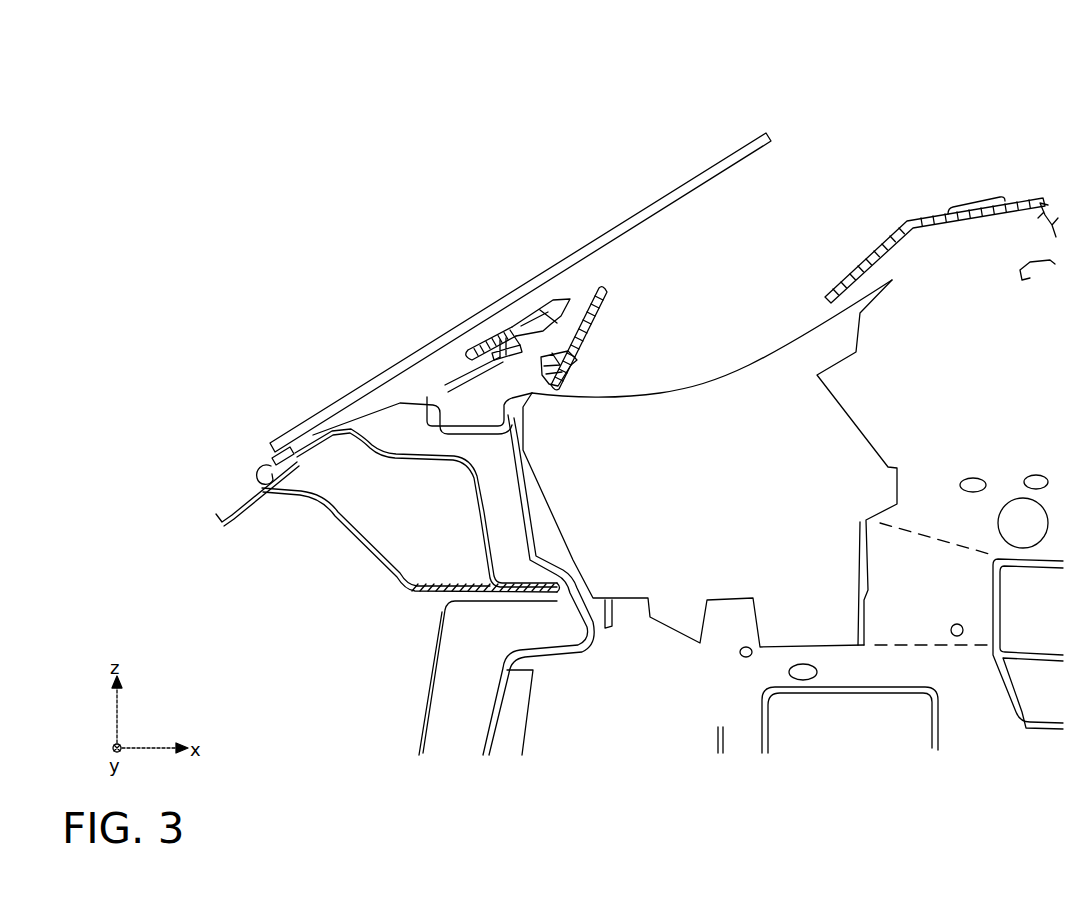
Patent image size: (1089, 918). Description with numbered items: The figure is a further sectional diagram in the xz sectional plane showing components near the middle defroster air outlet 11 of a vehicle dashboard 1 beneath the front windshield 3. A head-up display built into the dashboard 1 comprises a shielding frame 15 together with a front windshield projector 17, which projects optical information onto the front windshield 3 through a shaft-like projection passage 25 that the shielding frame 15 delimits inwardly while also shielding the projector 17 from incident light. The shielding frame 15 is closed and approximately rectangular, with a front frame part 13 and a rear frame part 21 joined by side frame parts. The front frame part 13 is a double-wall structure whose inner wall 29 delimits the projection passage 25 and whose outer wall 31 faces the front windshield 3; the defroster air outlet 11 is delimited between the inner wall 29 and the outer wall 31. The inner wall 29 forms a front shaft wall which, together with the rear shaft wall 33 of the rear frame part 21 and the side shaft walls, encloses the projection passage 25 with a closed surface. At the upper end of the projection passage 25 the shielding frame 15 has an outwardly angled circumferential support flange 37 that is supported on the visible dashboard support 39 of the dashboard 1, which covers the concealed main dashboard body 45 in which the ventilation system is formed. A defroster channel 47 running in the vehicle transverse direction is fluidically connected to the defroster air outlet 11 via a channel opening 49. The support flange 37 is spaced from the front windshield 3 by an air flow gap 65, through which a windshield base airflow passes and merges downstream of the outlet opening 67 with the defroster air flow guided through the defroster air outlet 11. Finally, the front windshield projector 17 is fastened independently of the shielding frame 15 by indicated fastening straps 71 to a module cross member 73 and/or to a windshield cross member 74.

The dashboard 1 is at (360, 421).
The front windshield 3 is at (667, 190).
The middle defroster air outlet 11 is at (599, 279).
The front frame part 13 is at (692, 278).
The shielding frame 15 is at (941, 242).
The front windshield projector 17 is at (830, 433).
The rear frame part 21 is at (935, 277).
The projection passage 25 is at (718, 335).
The inner wall 29 is at (597, 311).
The outer wall 31 is at (561, 317).
The rear shaft wall 33 is at (897, 247).
The circumferential support flange 37 is at (514, 322).
The visible dashboard support 39 is at (444, 382).
The main dashboard body 45 is at (427, 395).
The defroster channel 47 is at (464, 409).
The channel opening 49 is at (524, 362).
The air flow gap 65 is at (474, 338).
The outlet opening 67 is at (604, 289).
The fastening straps 71 is at (960, 646).
The module cross member 73 is at (1043, 568).
The windshield cross member 74 is at (422, 460).